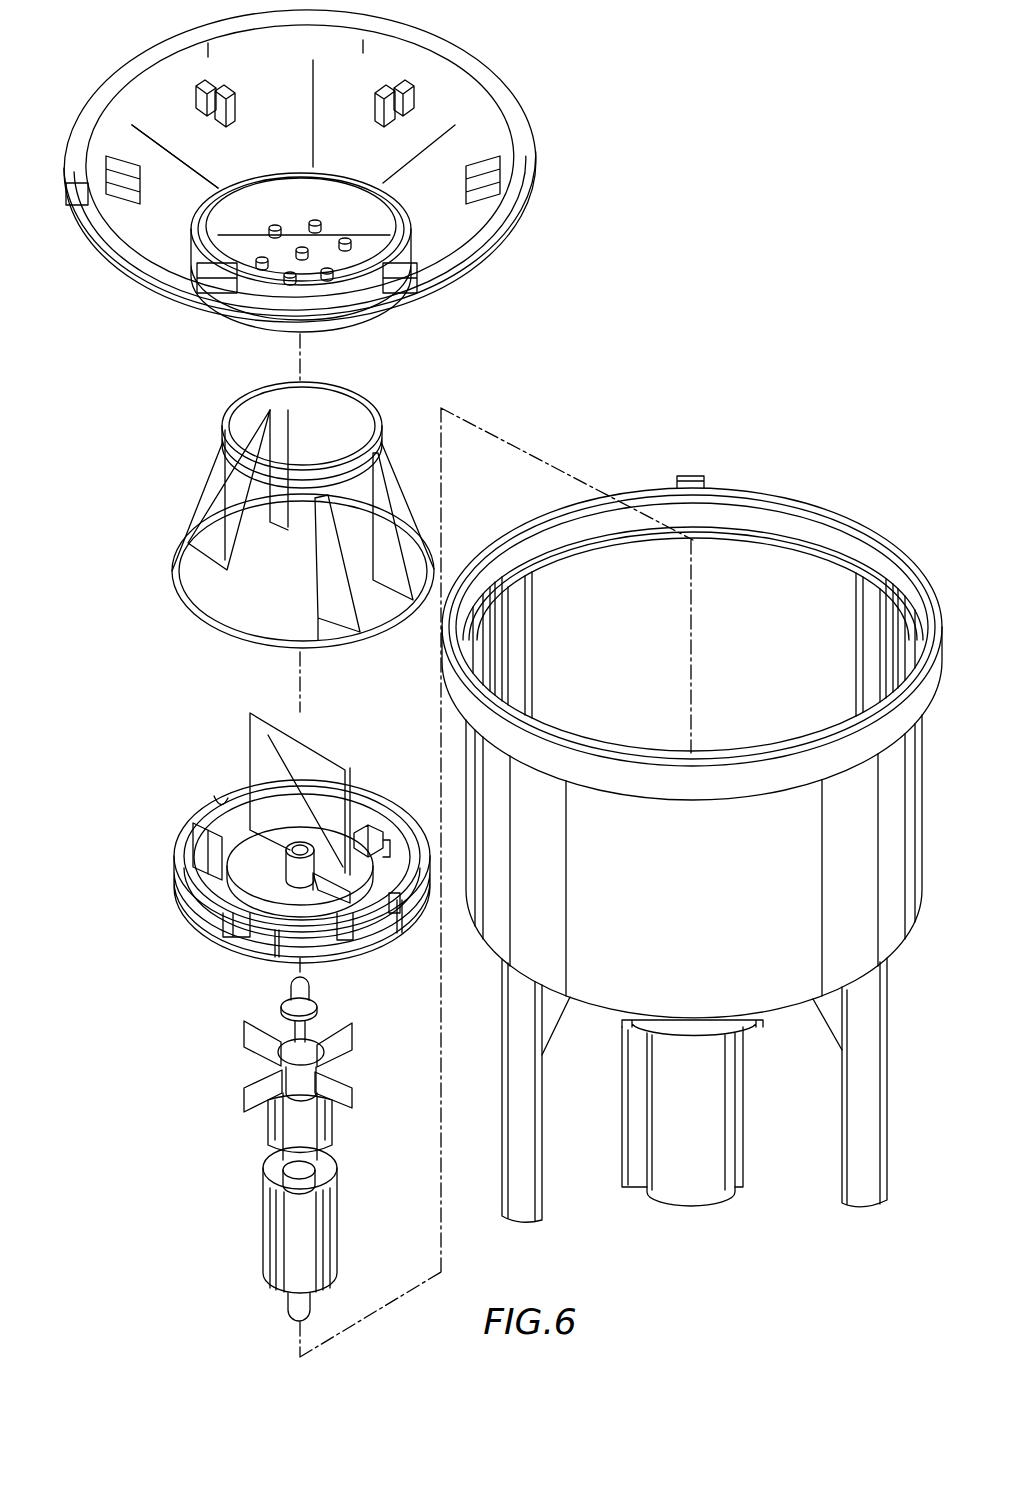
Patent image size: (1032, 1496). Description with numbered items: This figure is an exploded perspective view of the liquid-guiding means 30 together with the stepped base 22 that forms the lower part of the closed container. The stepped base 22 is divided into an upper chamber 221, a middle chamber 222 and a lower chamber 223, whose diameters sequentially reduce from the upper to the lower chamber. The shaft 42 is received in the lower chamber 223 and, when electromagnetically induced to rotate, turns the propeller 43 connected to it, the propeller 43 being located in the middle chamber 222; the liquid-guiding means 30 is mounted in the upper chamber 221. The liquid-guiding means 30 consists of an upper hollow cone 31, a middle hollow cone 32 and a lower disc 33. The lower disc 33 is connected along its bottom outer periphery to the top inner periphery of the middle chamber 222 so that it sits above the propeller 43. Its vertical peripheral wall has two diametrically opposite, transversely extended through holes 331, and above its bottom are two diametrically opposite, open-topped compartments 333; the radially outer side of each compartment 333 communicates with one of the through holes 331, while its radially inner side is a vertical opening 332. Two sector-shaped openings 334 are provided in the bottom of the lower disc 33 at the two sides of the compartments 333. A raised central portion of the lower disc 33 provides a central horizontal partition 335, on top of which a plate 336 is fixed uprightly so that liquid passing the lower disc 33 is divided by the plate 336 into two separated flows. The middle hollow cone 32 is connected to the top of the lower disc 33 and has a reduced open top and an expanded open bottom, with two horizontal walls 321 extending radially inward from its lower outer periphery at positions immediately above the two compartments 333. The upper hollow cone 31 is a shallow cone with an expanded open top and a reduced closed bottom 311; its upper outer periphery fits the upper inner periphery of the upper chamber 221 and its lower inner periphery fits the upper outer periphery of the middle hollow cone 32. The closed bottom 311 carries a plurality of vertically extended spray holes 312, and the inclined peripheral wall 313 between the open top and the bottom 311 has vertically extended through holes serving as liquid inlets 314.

The stepped base 22 is at (800, 490).
The upper chamber 221 is at (818, 590).
The middle chamber 222 is at (687, 1028).
The lower chamber 223 is at (688, 1178).
The liquid-guiding means 30 is at (101, 730).
The upper hollow cone 31 is at (188, 336).
The closed bottom 311 is at (373, 248).
The spray holes 312 is at (350, 248).
The inclined peripheral wall 313 is at (452, 127).
The liquid inlets 314 is at (413, 100).
The middle hollow cone 32 is at (181, 542).
The horizontal walls 321 is at (215, 533).
The lower disc 33 is at (183, 804).
The through holes 331 is at (218, 800).
The vertical opening 332 is at (350, 892).
The compartments 333 is at (383, 965).
The sector-shaped openings 334 is at (393, 858).
The central horizontal partition 335 is at (263, 878).
The plate 336 is at (313, 767).
The shaft 42 is at (298, 1223).
The propeller 43 is at (253, 1042).